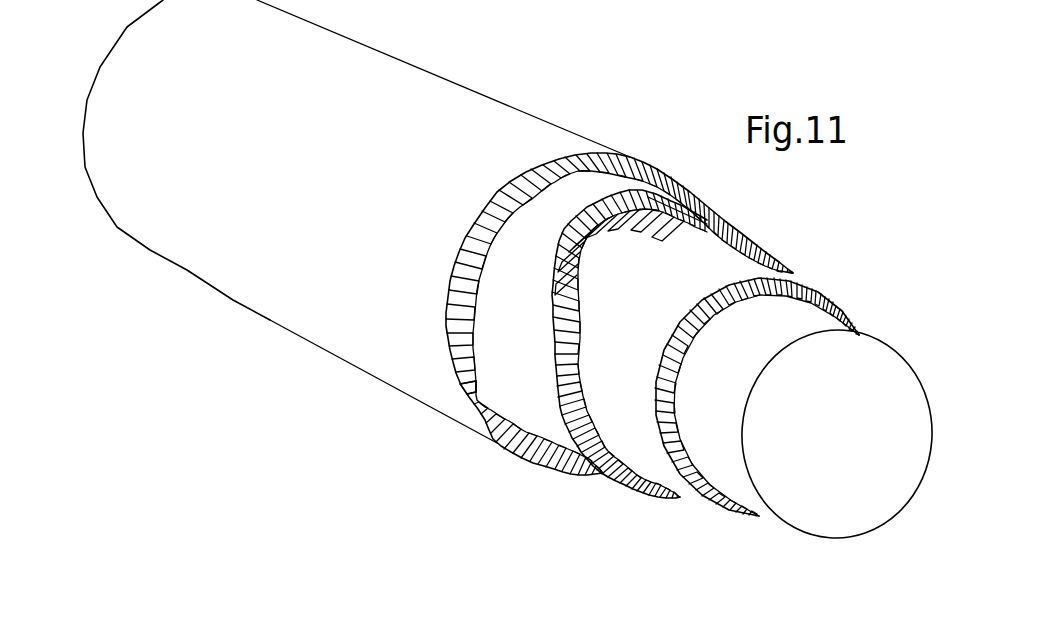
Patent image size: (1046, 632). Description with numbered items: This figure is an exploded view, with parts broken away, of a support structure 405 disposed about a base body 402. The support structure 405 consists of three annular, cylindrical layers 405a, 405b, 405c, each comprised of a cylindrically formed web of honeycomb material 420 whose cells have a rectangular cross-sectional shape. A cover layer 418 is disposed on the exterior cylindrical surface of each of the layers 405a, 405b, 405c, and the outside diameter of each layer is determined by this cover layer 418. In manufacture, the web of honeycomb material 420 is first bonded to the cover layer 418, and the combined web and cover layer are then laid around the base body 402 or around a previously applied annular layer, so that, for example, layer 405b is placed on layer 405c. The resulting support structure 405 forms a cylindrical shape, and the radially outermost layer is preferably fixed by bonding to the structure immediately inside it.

The support structure 405 is at (498, 90).
The annular layer 405a is at (528, 450).
The annular layer 405b is at (640, 487).
The annular layer 405c is at (742, 517).
The base body 402 is at (873, 360).
The cover layer 418 is at (373, 362).
The web of honeycomb material 420 is at (467, 385).